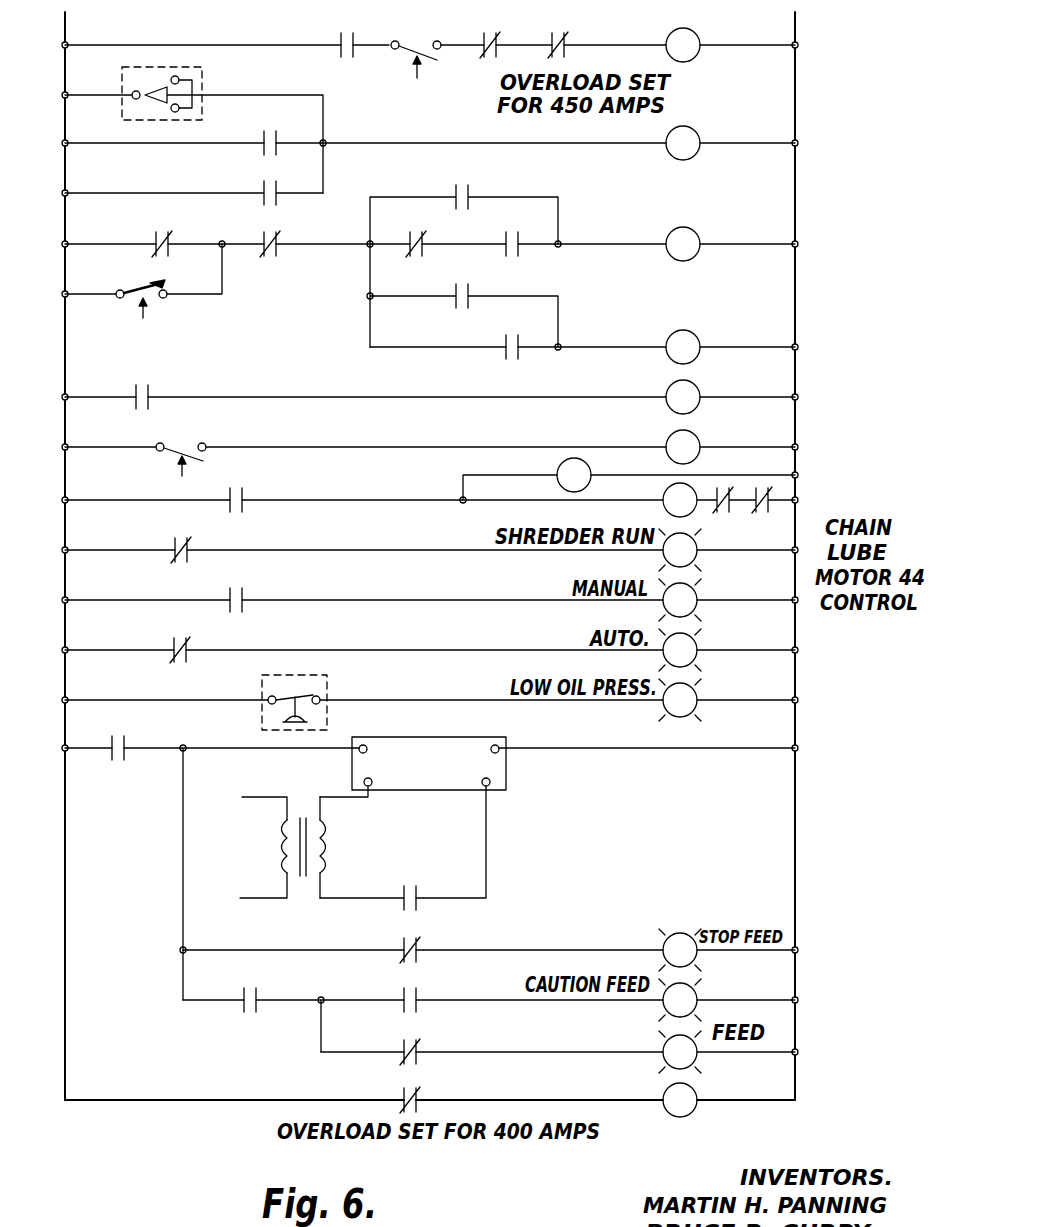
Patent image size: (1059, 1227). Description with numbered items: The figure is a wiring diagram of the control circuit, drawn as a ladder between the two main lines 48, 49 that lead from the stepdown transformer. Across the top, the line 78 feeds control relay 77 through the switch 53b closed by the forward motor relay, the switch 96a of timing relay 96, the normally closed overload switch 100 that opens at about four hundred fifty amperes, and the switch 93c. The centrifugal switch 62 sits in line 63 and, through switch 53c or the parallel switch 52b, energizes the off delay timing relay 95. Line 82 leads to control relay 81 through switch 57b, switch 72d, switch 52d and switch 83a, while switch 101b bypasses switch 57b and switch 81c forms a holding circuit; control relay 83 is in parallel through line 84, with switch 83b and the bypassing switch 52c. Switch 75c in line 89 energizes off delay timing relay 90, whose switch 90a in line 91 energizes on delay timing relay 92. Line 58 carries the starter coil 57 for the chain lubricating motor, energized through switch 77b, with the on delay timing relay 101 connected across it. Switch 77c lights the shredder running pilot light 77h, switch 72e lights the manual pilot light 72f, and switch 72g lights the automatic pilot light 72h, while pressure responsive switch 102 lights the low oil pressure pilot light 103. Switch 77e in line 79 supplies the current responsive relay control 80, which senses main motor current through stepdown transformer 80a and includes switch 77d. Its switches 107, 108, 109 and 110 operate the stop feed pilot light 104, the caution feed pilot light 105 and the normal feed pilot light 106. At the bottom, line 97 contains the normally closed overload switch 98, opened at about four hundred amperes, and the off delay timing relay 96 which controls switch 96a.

The main line 49 is at (97, 555).
The main line 48 is at (835, 556).
The switch 53b is at (313, 34).
The switch 96a is at (403, 43).
The overload switch 100 is at (515, 34).
The switch 93c is at (588, 34).
The control relay 77 is at (709, 56).
The line 78 is at (457, 65).
The centrifugal switch 62 is at (194, 130).
The switch 53c is at (239, 158).
The line 63 is at (459, 127).
The off delay timing relay 95 is at (708, 157).
The switch 52b is at (203, 206).
The switch 57b is at (195, 231).
The switch 72d is at (296, 264).
The switch 81c is at (464, 204).
The switch 52d is at (403, 261).
The switch 83a is at (540, 263).
The control relay 81 is at (705, 234).
The line 82 is at (458, 266).
The switch 101b is at (156, 290).
The switch 52c is at (464, 295).
The switch 83b is at (545, 362).
The control relay 83 is at (705, 336).
The line 84 is at (611, 331).
The switch 75c is at (179, 382).
The off delay timing relay 90 is at (704, 391).
The line 89 is at (457, 384).
The switch 90a is at (211, 443).
The on delay timing relay 92 is at (704, 441).
The line 91 is at (457, 433).
The on delay timing relay 101 is at (629, 474).
The line 58 is at (456, 488).
The switch 77b is at (269, 514).
The starter coil 57 is at (654, 505).
The switch 77c is at (156, 565).
The pilot light 77h is at (716, 559).
The switch 72e is at (269, 615).
The pilot light 72f is at (716, 610).
The switch 72g is at (150, 666).
The pilot light 72h is at (717, 658).
The pressure responsive switch 102 is at (330, 694).
The pilot light 103 is at (712, 711).
The switch 77e is at (153, 735).
The current responsive relay control 80 is at (413, 803).
The line 79 is at (430, 874).
The stepdown transformer 80a is at (268, 847).
The switch 77d is at (403, 884).
The switch 107 is at (446, 939).
The pilot light 104 is at (673, 931).
The switch 108 is at (445, 989).
The pilot light 105 is at (720, 994).
The switch 110 is at (226, 1023).
The switch 109 is at (445, 1040).
The pilot light 106 is at (651, 1062).
The overload switch 98 is at (437, 1089).
The line 97 is at (430, 1125).
The off delay timing relay 96 is at (697, 1118).